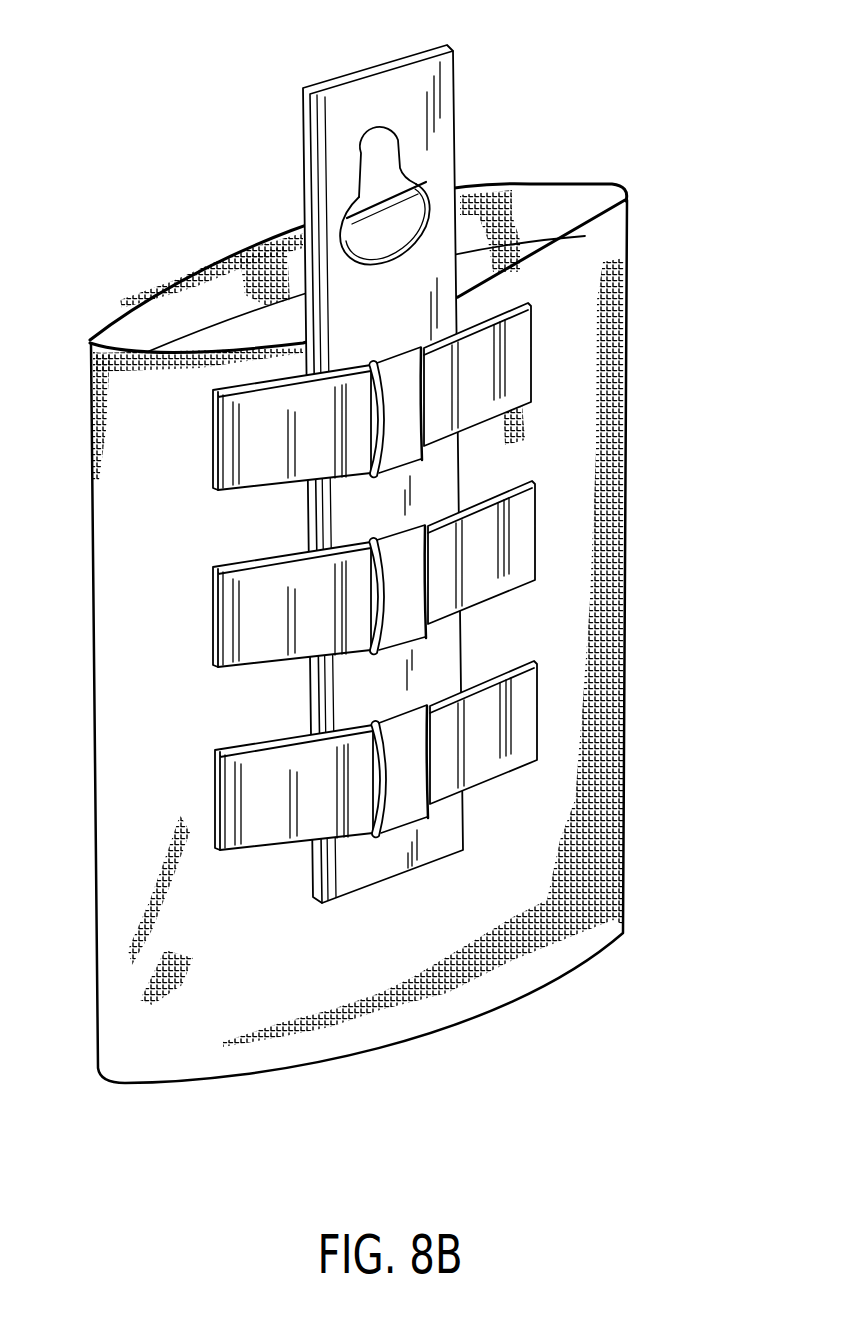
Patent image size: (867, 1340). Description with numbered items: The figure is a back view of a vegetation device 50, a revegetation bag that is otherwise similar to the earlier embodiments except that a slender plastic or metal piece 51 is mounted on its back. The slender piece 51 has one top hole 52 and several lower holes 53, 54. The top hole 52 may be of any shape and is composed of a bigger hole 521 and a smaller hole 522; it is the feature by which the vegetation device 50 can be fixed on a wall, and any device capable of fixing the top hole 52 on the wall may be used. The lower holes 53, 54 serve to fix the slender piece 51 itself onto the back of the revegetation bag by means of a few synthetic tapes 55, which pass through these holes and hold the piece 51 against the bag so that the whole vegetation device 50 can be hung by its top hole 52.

The vegetation device 50 is at (604, 802).
The slender plastic or metal piece 51 is at (443, 90).
The top hole 52 is at (400, 134).
The bigger hole 521 is at (418, 185).
The smaller hole 522 is at (371, 150).
The lower hole 53 is at (373, 363).
The lower hole 54 is at (422, 346).
The synthetic tape 55 is at (527, 368).